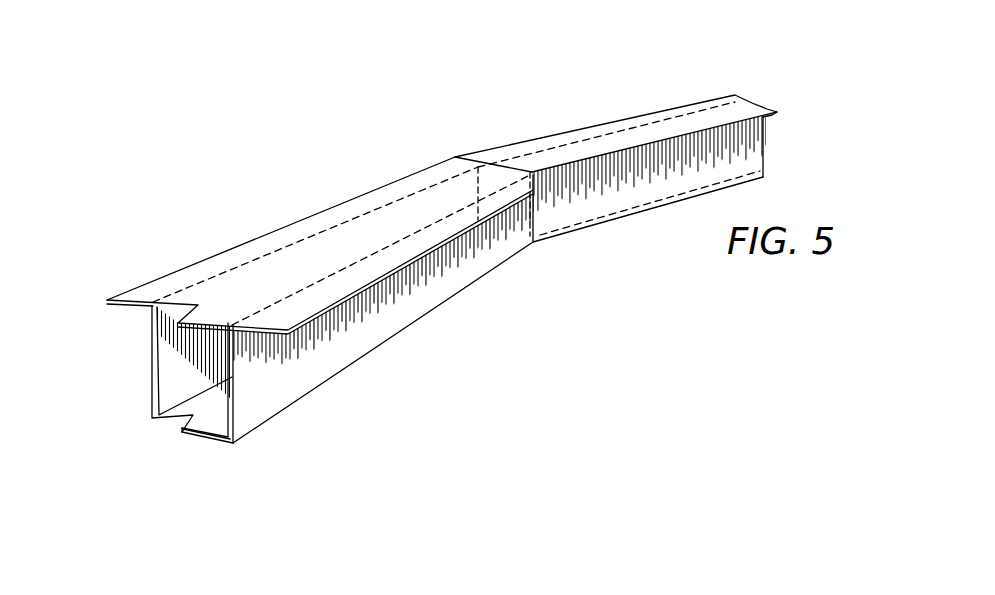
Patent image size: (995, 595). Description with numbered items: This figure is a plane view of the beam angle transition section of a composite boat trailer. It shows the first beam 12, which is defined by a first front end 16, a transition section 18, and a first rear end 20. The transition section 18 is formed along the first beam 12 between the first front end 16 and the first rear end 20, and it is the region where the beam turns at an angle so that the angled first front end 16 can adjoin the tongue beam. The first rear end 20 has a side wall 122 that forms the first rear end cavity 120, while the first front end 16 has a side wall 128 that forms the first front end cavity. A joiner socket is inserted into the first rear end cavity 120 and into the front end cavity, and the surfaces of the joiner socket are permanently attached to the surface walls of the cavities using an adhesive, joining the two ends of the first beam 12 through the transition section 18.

The first beam 12 is at (117, 190).
The first front end 16 is at (655, 127).
The transition section 18 is at (507, 166).
The first rear end 20 is at (338, 238).
The first rear end cavity 120 is at (207, 413).
The side wall 122 is at (272, 394).
The side wall 128 is at (634, 193).